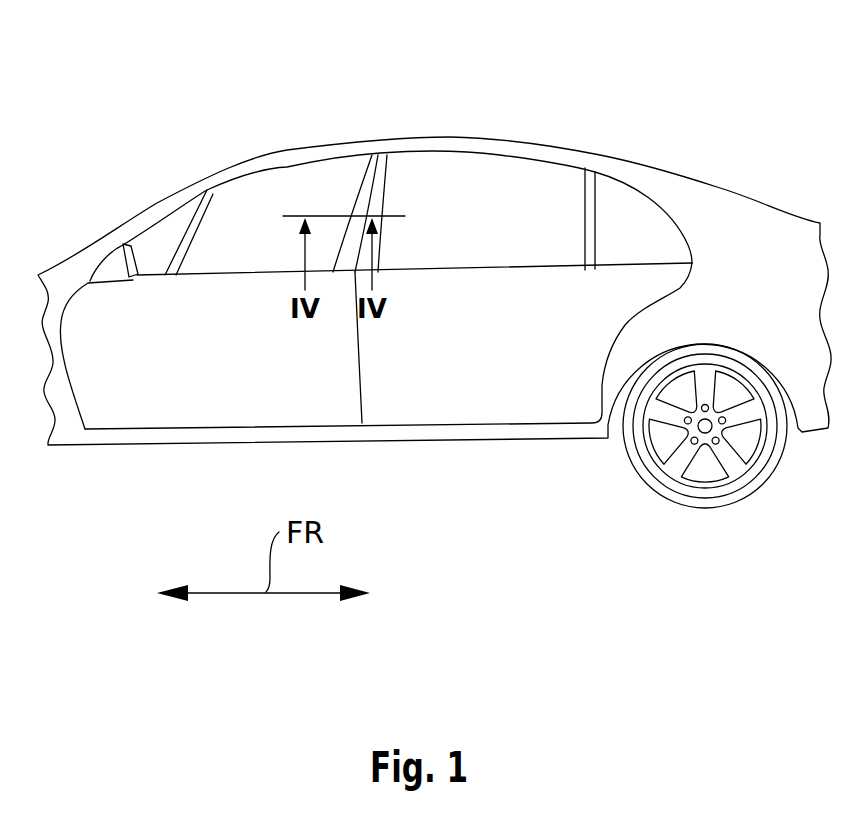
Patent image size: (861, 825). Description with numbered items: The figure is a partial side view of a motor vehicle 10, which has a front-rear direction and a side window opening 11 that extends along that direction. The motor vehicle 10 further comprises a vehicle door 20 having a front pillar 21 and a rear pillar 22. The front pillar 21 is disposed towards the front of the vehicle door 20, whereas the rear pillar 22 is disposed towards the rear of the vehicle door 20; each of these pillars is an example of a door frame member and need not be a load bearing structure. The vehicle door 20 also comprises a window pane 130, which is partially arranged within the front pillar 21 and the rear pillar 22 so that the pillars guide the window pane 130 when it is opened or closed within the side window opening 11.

The motor vehicle 10 is at (127, 124).
The side window opening 11 is at (325, 158).
The vehicle door 20 is at (209, 392).
The front pillar 21 is at (203, 182).
The rear pillar 22 is at (364, 165).
The window pane 130 is at (267, 190).